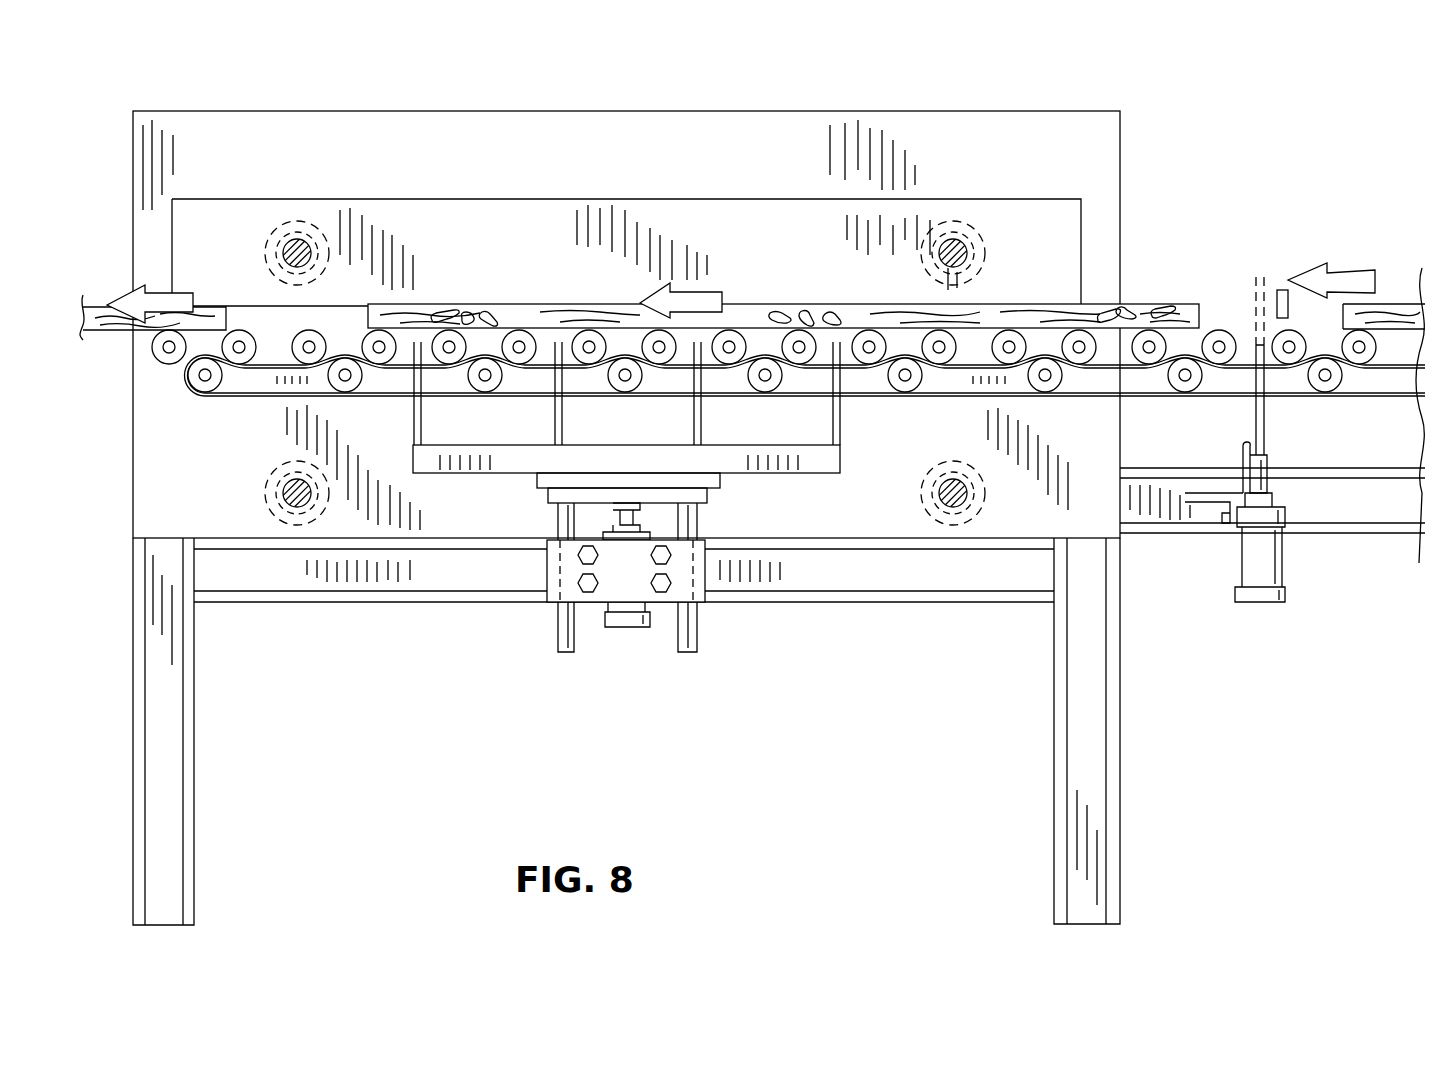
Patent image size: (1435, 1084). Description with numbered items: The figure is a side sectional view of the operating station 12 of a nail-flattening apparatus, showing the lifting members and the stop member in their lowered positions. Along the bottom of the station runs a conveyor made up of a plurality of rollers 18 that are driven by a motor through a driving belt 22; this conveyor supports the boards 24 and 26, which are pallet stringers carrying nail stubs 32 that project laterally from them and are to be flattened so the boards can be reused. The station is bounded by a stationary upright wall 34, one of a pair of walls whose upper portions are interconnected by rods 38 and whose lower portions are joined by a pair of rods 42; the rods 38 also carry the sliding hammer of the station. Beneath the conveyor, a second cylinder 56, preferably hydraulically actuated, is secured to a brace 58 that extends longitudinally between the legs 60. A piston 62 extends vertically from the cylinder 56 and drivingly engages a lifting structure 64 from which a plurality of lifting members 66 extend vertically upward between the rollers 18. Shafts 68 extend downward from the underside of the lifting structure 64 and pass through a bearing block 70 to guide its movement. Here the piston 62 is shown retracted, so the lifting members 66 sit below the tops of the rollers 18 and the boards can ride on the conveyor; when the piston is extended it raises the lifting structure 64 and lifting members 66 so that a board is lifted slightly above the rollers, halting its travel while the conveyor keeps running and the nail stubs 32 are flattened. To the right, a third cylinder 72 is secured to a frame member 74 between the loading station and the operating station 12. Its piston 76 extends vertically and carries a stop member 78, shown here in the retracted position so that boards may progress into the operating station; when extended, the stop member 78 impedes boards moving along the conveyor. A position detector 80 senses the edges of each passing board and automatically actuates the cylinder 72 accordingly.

The operating station 12 is at (1158, 262).
The rollers 18 is at (240, 393).
The driving belt 22 is at (260, 398).
The board 24 is at (92, 305).
The board 26 is at (889, 305).
The nail stubs 32 is at (808, 318).
The stationary upright wall 34 is at (1108, 152).
The rods 38 is at (285, 257).
The rods 42 is at (283, 497).
The second cylinder 56 is at (623, 630).
The brace 58 is at (335, 602).
The legs 60 is at (190, 747).
The piston 62 is at (620, 518).
The lifting structure 64 is at (668, 447).
The lifting members 66 is at (840, 440).
The shafts 68 is at (690, 650).
The bearing block 70 is at (697, 598).
The third cylinder 72 is at (1262, 597).
The frame member 74 is at (1322, 527).
The piston 76 is at (1268, 463).
The stop member 78 is at (1263, 416).
The position detector 80 is at (1281, 289).